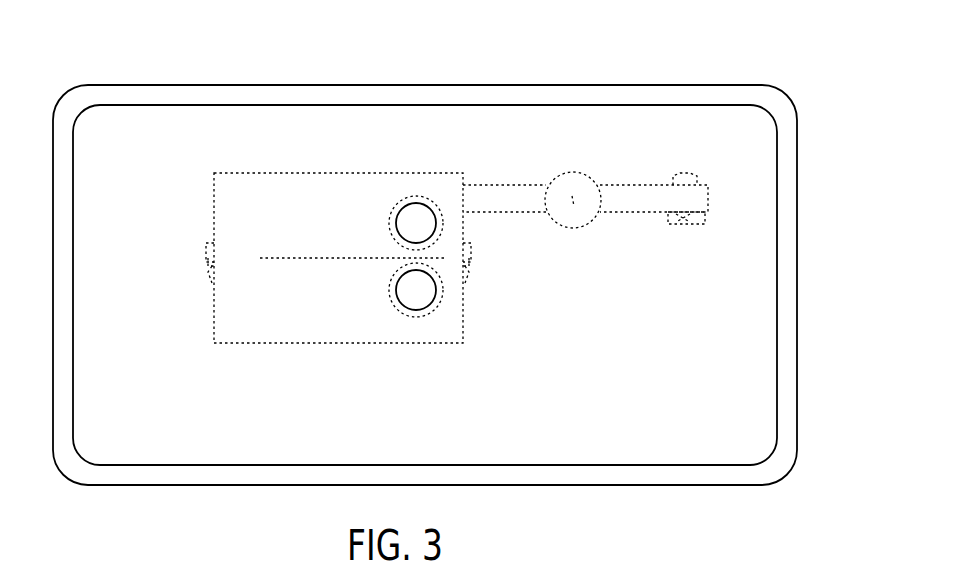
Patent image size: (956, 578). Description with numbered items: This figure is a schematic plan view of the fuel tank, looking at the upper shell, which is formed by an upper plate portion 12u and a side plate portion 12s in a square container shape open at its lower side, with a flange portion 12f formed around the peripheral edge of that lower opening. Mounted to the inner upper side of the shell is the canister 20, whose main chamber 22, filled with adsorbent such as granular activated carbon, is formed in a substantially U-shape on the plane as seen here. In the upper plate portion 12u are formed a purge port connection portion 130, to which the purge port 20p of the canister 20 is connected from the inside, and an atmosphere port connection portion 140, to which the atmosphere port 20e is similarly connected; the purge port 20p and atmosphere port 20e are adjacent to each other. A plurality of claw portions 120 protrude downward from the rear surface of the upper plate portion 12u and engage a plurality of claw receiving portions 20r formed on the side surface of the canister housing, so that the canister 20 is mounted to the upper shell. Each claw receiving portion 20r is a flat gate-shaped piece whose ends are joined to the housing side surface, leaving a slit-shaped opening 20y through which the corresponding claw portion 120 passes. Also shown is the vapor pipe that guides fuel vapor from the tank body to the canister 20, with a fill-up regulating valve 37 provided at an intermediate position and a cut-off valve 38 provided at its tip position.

The side plate portion 12s is at (797, 138).
The flange portion 12f is at (787, 240).
The upper plate portion 12u is at (608, 165).
The canister 20 is at (306, 214).
The purge port 20p is at (433, 197).
The atmosphere port 20e is at (438, 309).
The claw receiving portion 20r is at (195, 266).
The slit-shaped opening 20y is at (212, 287).
The main chamber 22 is at (275, 305).
The fill-up regulating valve 37 is at (575, 206).
The cut-off valve 38 is at (690, 172).
The claw portion 120 is at (200, 253).
The purge port connection portion 130 is at (399, 190).
The atmosphere port connection portion 140 is at (411, 323).